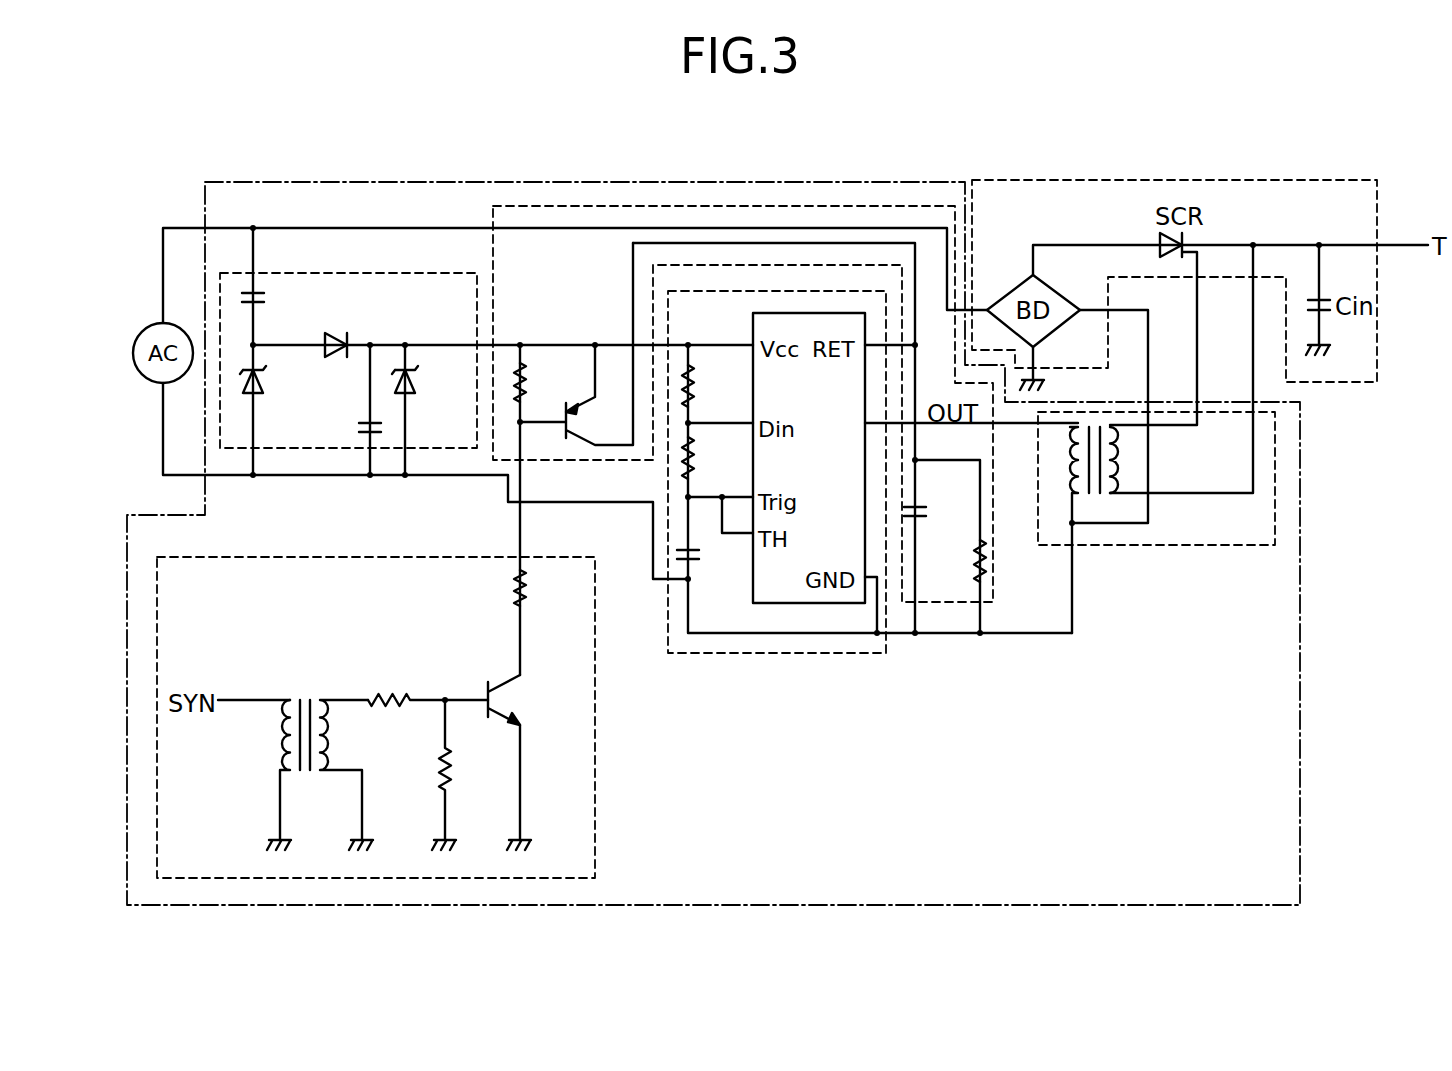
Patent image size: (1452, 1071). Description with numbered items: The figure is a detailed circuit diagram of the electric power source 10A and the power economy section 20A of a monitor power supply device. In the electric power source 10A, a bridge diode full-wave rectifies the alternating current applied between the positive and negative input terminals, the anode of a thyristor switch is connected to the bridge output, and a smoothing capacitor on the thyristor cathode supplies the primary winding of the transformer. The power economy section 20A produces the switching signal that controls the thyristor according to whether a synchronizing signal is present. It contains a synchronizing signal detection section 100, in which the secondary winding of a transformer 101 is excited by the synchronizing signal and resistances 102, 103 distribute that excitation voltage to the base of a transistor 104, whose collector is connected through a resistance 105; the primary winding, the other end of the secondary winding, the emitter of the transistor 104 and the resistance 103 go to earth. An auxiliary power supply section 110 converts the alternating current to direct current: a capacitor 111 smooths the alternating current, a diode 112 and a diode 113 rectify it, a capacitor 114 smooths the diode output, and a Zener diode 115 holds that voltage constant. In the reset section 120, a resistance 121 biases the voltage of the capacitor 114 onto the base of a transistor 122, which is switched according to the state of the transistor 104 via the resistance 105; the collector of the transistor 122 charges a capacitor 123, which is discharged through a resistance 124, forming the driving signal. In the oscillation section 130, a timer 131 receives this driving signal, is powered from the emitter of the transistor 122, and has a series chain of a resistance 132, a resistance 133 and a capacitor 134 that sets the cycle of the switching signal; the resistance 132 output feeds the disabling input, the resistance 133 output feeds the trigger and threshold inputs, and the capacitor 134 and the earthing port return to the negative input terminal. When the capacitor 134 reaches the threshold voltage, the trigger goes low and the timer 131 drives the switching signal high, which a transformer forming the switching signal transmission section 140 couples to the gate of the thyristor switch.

The electric power source 10A is at (1108, 180).
The power economy section 20A is at (252, 182).
The synchronizing signal detection section 100 is at (595, 812).
The transformer 101 is at (324, 750).
The resistance 102 is at (424, 680).
The resistance 103 is at (473, 770).
The transistor 104 is at (525, 757).
The resistance 105 is at (489, 589).
The auxiliary power supply section 110 is at (387, 273).
The capacitor 111 is at (279, 293).
The diode 112 is at (278, 382).
The diode 113 is at (351, 330).
The capacitor 114 is at (344, 429).
The Zener diode 115 is at (430, 382).
The reset section 120 is at (580, 206).
The resistance 121 is at (548, 382).
The transistor 122 is at (576, 344).
The capacitor 123 is at (938, 499).
The resistance 124 is at (954, 561).
The oscillation section 130 is at (818, 291).
The timer 131 is at (790, 603).
The resistance 132 is at (715, 386).
The resistance 133 is at (715, 458).
The capacitor 134 is at (714, 563).
The switching signal transmission section 140 is at (1202, 545).